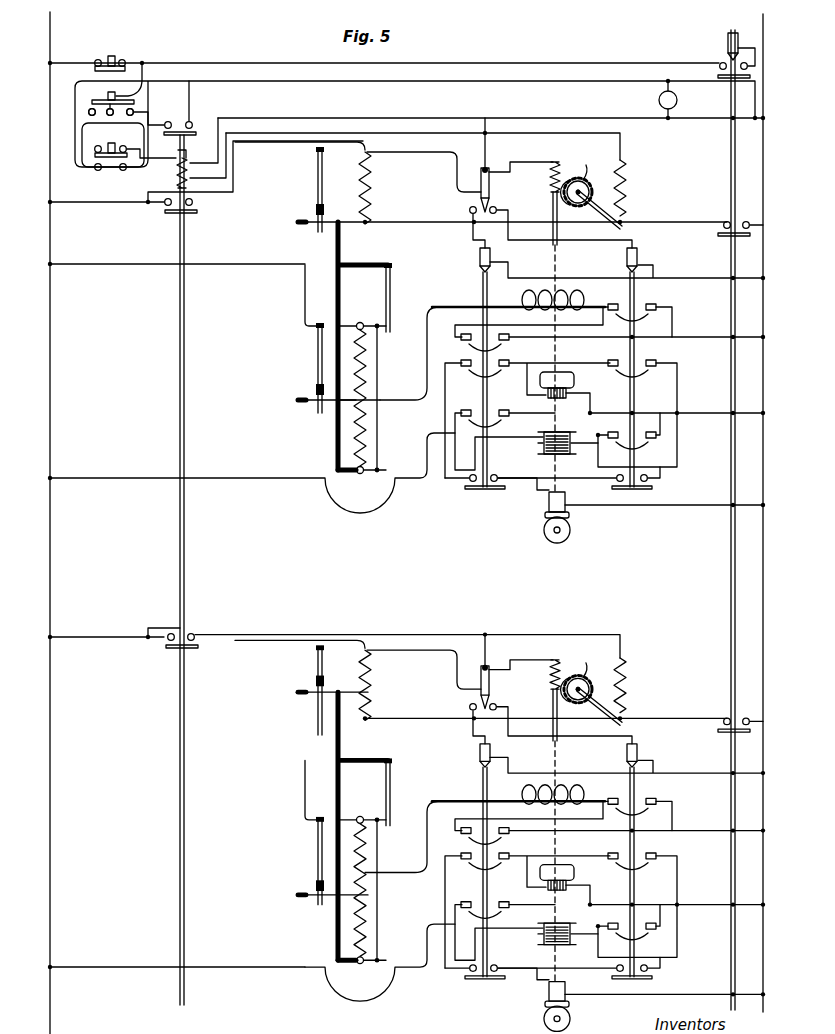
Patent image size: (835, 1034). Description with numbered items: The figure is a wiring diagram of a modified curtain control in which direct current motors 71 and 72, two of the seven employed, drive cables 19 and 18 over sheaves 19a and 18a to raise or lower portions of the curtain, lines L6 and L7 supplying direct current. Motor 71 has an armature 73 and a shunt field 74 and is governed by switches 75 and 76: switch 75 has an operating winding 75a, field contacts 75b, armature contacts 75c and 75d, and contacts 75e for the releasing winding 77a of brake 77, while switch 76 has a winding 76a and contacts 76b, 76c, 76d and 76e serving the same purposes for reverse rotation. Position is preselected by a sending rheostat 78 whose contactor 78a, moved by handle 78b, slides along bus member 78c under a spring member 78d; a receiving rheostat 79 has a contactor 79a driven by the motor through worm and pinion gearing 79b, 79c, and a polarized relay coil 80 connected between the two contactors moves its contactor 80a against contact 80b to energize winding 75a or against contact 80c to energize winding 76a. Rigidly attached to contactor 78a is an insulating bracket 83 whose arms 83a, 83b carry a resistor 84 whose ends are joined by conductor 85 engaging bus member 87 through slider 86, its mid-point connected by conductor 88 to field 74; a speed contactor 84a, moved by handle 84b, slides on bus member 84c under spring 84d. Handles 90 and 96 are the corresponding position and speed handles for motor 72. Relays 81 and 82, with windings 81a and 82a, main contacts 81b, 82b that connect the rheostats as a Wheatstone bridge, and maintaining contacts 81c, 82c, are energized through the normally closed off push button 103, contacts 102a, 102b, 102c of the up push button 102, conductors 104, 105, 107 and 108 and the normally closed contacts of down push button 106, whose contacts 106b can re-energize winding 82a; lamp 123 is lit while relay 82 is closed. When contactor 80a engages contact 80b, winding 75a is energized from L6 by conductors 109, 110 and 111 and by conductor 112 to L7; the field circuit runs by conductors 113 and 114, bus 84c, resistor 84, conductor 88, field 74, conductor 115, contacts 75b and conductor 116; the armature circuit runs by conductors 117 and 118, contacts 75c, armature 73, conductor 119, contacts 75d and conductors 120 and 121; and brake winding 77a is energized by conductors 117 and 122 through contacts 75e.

The line L6 is at (50, 22).
The line L7 is at (763, 14).
The up push button 102 is at (135, 78).
The contact of up push button 102a is at (89, 112).
The contact of up push button 102b is at (107, 112).
The contact of up push button 102c is at (133, 112).
The off push button 103 is at (95, 56).
The conductor 104 is at (265, 81).
The conductor 105 is at (274, 54).
The down push button switch 106 is at (95, 149).
The contacts of down push button switch 106b is at (120, 170).
The conductor 107 is at (345, 109).
The conductor 108 is at (190, 100).
The conductor 109 is at (103, 202).
The conductor 110 is at (148, 194).
The conductor 111 is at (483, 143).
The conductor 112 is at (572, 278).
The conductor 113 is at (113, 266).
The conductor 114 is at (305, 296).
The conductor 115 is at (518, 320).
The conductor 116 is at (648, 329).
The conductor 117 is at (253, 480).
The conductor 118 is at (445, 416).
The conductor 119 is at (522, 398).
The conductor 120 is at (458, 467).
The conductor 121 is at (710, 415).
The conductor 122 is at (447, 480).
The lamp 123 is at (658, 100).
The relay 81 is at (192, 237).
The operating winding 81a is at (190, 172).
The main contacts 81b is at (164, 212).
The auxiliary contacts 81c is at (193, 128).
The relay 82 is at (731, 100).
The operating winding 82a is at (722, 47).
The main contacts 82b is at (720, 234).
The auxiliary contacts 82c is at (717, 66).
The sending rheostat 78 is at (372, 192).
The contactor 78a is at (362, 226).
The handle 78b is at (300, 226).
The bus member 78c is at (317, 174).
The spring member 78d is at (315, 208).
The bracket 83 is at (325, 283).
The arm of bracket 83a is at (357, 315).
The arm of bracket 83b is at (360, 474).
The resistor 84 is at (368, 356).
The contactor 84a is at (340, 404).
The handle 84b is at (307, 402).
The bus member 84c is at (317, 354).
The spring 84d is at (317, 388).
The conductor 85 is at (380, 431).
The slider 86 is at (392, 324).
The bus member 87 is at (392, 290).
The conductor 88 is at (427, 385).
The handle 90 is at (313, 692).
The handle 96 is at (313, 896).
The polarized relay coil 80 is at (480, 180).
The contactor 80a is at (495, 170).
The contact 80b is at (469, 210).
The contact 80c is at (500, 202).
The receiving rheostat 79 is at (630, 192).
The contactor 79a is at (608, 188).
The worm 79b is at (553, 202).
The pinion 79c is at (596, 157).
The motor 71 is at (559, 345).
The motor 72 is at (568, 863).
The armature 73 is at (576, 380).
The shunt field 74 is at (588, 296).
The switch 75 is at (480, 292).
The operating winding 75a is at (478, 260).
The contacts 75b is at (505, 345).
The contacts 75c is at (508, 380).
The contacts 75d is at (462, 405).
The contacts 75e is at (470, 484).
The switch 76 is at (636, 295).
The operating winding 76a is at (640, 255).
The contacts 76b is at (660, 312).
The contacts 76c is at (650, 375).
The contacts 76d is at (655, 443).
The contacts 76e is at (652, 486).
The brake 77 is at (571, 525).
The releasing winding 77a is at (540, 502).
The cable 19 is at (574, 440).
The sheave 19a is at (538, 445).
The cable 18 is at (569, 933).
The sheave 18a is at (520, 937).